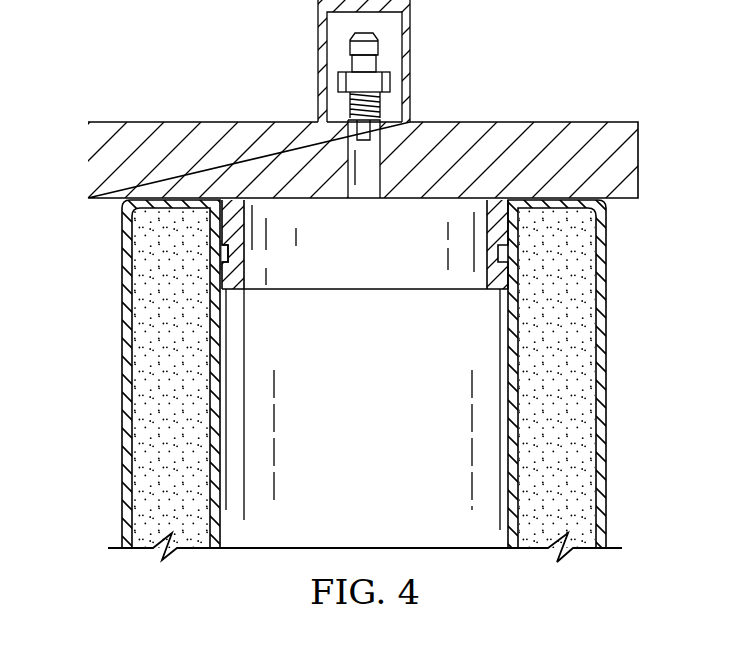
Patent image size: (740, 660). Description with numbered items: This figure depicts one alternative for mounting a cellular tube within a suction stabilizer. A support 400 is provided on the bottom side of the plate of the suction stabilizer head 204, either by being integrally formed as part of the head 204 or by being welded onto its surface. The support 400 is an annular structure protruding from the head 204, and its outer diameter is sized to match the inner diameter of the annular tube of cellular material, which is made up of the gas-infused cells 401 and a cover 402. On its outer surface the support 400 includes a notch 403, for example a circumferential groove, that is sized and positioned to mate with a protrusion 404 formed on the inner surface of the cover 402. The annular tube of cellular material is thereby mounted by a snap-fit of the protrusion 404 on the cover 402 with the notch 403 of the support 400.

The suction stabilizer head 204 is at (88, 158).
The support 400 is at (496, 291).
The gas-infused cells 401 is at (580, 360).
The cover 402 is at (123, 500).
The notch 403 is at (228, 262).
The protrusion 404 is at (229, 253).